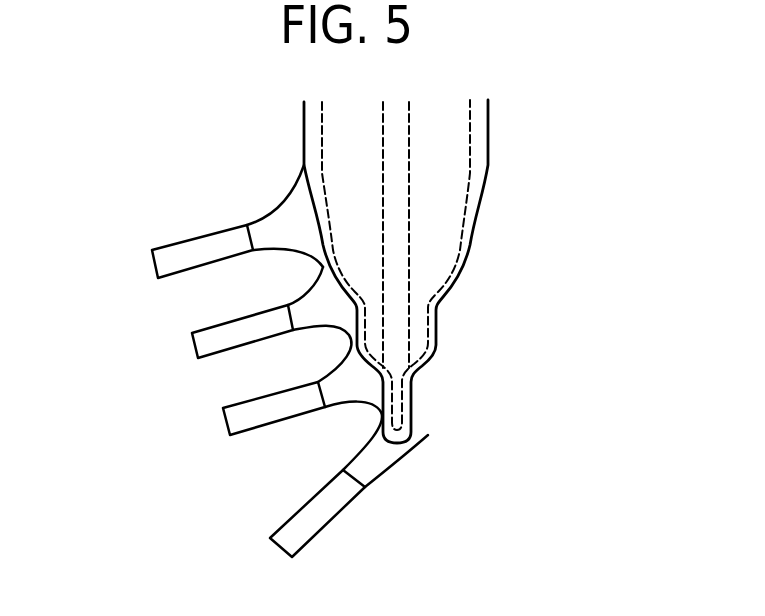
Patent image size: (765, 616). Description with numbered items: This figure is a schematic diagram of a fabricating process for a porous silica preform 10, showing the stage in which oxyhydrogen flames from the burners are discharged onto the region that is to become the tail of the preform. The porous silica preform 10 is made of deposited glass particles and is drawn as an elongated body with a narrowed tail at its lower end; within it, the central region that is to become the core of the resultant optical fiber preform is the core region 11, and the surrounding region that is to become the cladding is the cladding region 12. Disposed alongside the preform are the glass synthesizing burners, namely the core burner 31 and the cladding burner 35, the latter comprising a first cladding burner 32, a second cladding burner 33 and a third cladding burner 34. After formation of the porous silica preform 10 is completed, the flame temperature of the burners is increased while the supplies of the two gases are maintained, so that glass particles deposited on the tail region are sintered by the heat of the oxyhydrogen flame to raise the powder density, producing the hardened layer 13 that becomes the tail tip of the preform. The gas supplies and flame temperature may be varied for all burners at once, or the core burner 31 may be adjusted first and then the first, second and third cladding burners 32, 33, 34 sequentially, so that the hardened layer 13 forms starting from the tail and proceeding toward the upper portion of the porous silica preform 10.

The porous silica preform 10 is at (475, 268).
The core region 11 is at (395, 181).
The cladding region 12 is at (473, 238).
The hardened layer 13 is at (442, 303).
The core burner 31 is at (314, 496).
The first cladding burner 32 is at (237, 419).
The second cladding burner 33 is at (205, 344).
The third cladding burner 34 is at (165, 262).
The cladding burner 35 is at (236, 361).